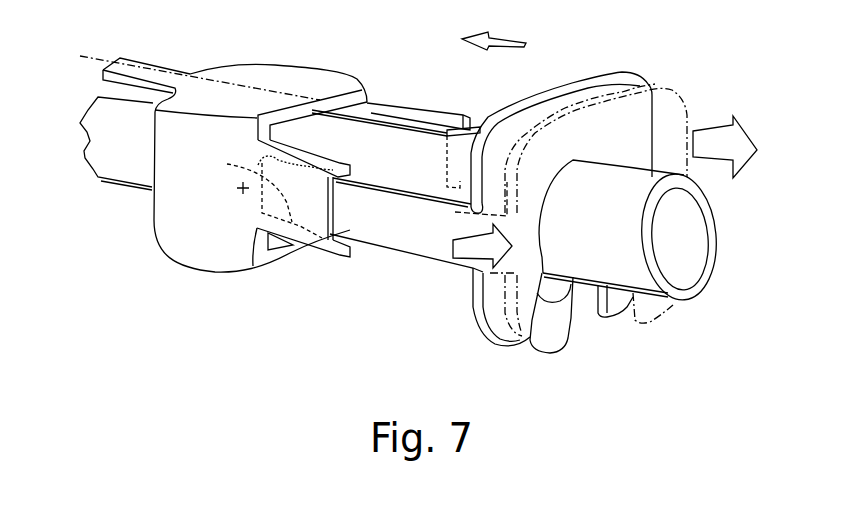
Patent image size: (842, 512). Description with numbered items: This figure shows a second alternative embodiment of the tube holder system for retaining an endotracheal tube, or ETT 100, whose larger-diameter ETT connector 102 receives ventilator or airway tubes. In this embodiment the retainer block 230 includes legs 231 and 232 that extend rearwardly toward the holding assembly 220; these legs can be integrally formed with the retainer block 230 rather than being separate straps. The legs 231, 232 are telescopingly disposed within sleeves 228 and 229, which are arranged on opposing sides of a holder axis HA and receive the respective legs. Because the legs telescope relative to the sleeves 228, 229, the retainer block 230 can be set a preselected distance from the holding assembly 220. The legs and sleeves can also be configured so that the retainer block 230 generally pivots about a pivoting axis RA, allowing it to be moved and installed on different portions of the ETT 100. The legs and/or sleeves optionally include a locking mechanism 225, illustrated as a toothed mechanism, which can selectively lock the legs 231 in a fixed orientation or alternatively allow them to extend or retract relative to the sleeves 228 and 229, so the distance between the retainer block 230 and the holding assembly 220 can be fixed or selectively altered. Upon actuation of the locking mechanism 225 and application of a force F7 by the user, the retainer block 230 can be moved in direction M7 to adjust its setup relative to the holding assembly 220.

The ETT 100 is at (396, 163).
The ETT connector 102 is at (597, 273).
The holding assembly 220 is at (300, 78).
The locking mechanism 225 is at (258, 164).
The sleeve 228 is at (308, 240).
The sleeve 229 is at (422, 108).
The retainer block 230 is at (566, 88).
The leg 231 is at (385, 238).
The leg 232 is at (477, 128).
The holder axis HA is at (185, 73).
The pivoting axis RA is at (243, 190).
The direction M7 is at (712, 143).
The force F7 is at (473, 249).